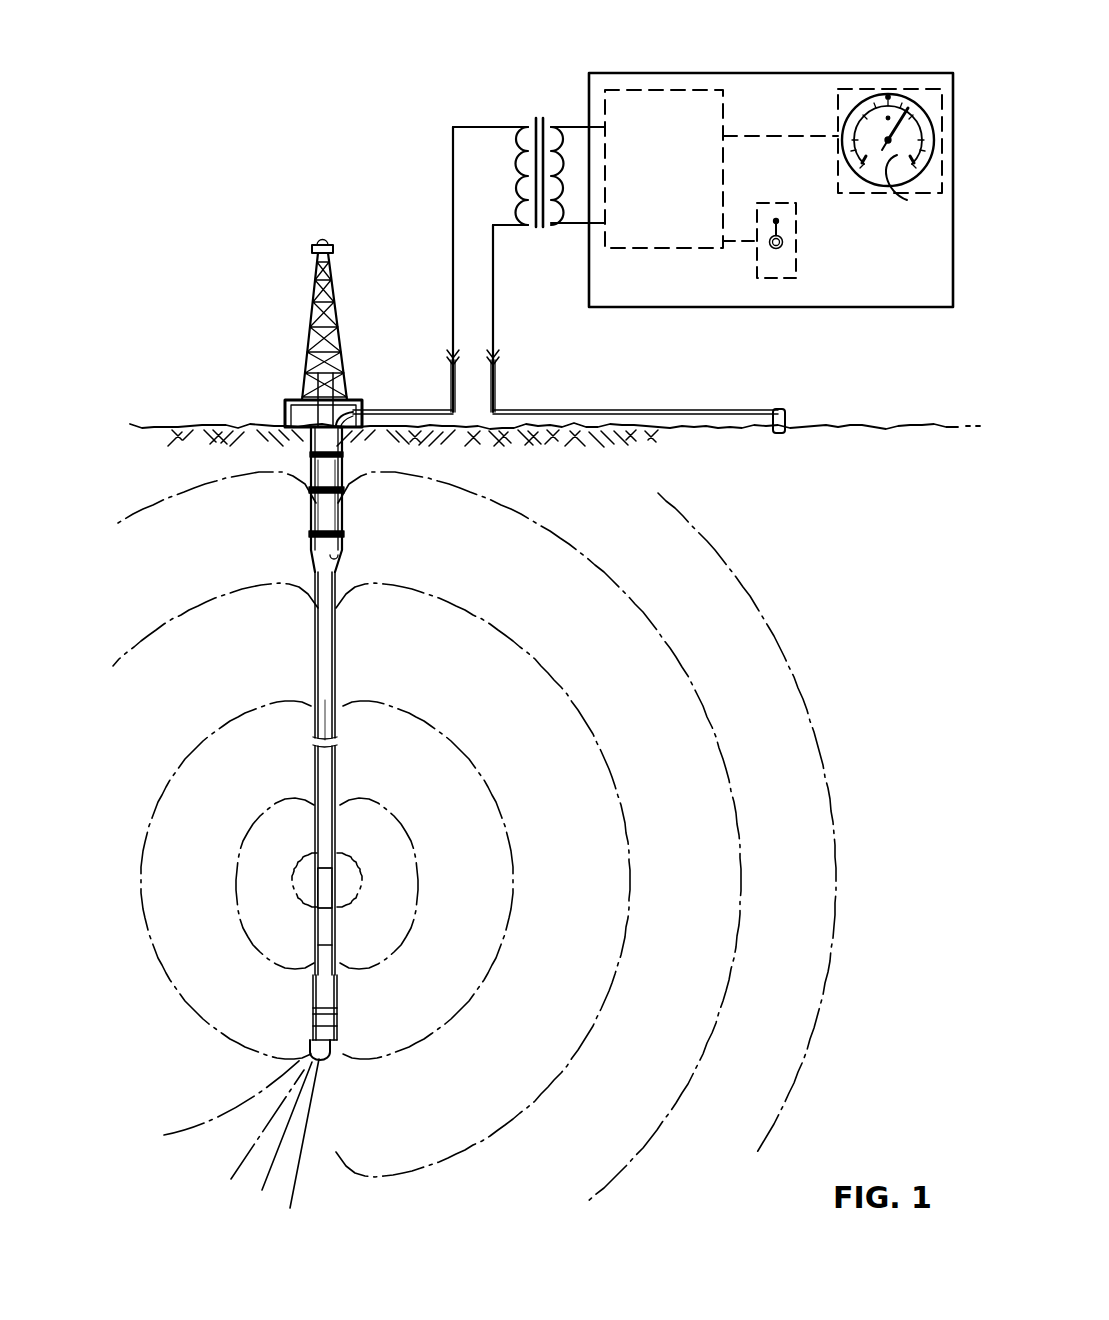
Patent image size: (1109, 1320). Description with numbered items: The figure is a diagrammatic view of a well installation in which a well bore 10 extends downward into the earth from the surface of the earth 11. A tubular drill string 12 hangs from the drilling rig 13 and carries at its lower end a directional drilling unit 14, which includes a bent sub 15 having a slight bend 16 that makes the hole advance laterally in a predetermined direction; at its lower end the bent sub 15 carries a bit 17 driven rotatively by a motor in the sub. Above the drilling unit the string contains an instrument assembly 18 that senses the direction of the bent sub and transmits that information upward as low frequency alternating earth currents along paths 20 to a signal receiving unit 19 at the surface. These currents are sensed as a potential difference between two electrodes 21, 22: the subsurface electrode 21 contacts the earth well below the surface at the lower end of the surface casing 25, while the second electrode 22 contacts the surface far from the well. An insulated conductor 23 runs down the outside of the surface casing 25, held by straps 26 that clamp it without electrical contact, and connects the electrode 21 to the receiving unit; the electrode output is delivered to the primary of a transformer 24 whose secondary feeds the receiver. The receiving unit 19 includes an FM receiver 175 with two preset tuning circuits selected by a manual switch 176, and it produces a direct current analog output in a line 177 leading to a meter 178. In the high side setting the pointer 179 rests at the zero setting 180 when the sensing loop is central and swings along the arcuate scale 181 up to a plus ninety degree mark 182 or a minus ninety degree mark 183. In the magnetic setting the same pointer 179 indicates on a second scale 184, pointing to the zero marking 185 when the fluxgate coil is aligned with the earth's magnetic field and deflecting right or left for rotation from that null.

The well bore 10 is at (338, 684).
The surface of the earth 11 is at (558, 430).
The tubular drill string 12 is at (327, 720).
The drilling rig 13 is at (308, 294).
The directional drilling unit 14 is at (319, 1026).
The bent sub 15 is at (316, 1011).
The bend 16 is at (325, 981).
The bit 17 is at (319, 1058).
The instrument assembly 18 is at (327, 890).
The signal receiving unit 19 is at (737, 304).
The current paths 20 is at (712, 719).
The subsurface electrode 21 is at (338, 558).
The second electrode 22 is at (784, 420).
The insulated conductor 23 is at (343, 478).
The transformer 24 is at (537, 118).
The surface casing 25 is at (318, 509).
The straps 26 is at (330, 531).
The FM receiver 175 is at (623, 97).
The switch 176 is at (757, 262).
The line 177 is at (733, 134).
The meter 178 is at (862, 62).
The pointer 179 is at (934, 137).
The zero setting 180 is at (889, 96).
The arcuate scale 181 is at (910, 108).
The plus 90° mark 182 is at (930, 167).
The minus 90° mark 183 is at (856, 173).
The second scale 184 is at (907, 200).
The zero marking 185 is at (888, 118).